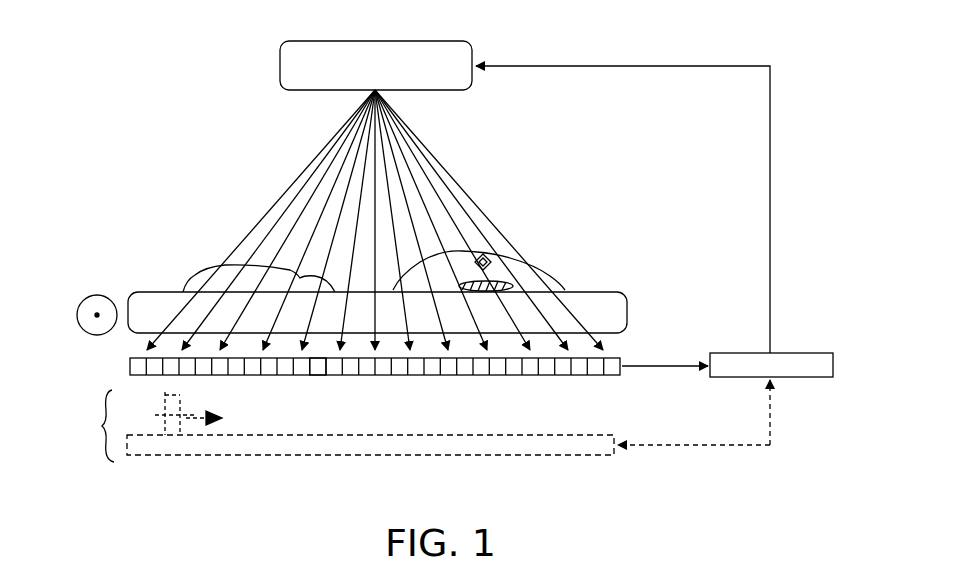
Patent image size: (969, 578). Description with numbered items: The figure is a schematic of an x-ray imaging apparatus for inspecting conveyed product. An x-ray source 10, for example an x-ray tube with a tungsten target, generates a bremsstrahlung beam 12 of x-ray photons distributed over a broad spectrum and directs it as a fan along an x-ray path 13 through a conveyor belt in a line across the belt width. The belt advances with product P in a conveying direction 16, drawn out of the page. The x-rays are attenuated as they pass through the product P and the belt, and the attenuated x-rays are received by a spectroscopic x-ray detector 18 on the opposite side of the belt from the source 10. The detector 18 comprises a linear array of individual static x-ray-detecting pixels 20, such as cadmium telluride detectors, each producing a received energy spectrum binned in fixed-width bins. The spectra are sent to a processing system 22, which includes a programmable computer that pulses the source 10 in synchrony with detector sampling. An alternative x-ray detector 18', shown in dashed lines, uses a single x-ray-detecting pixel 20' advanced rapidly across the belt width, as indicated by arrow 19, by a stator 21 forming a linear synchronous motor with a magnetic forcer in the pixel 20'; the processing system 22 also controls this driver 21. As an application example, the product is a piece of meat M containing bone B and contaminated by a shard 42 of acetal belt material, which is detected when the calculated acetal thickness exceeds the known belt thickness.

The x-ray source 10 is at (389, 40).
The bremsstrahlung beam 12 is at (352, 113).
The x-ray path 13 is at (378, 235).
The conveying direction 16 is at (98, 293).
The spectroscopic x-ray detector 18 is at (396, 386).
The alternative x-ray detector 18' is at (90, 426).
The arrow 19 is at (225, 420).
The x-ray-detecting pixel 20 is at (331, 382).
The single x-ray-detecting pixel 20' is at (201, 411).
The stator 21 is at (545, 457).
The processing system 22 is at (800, 373).
The shard 42 is at (505, 280).
The product P is at (220, 272).
The meat M is at (560, 276).
The bone B is at (490, 256).